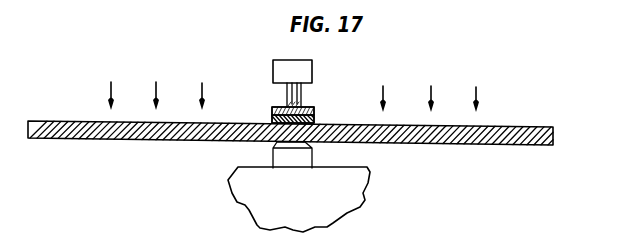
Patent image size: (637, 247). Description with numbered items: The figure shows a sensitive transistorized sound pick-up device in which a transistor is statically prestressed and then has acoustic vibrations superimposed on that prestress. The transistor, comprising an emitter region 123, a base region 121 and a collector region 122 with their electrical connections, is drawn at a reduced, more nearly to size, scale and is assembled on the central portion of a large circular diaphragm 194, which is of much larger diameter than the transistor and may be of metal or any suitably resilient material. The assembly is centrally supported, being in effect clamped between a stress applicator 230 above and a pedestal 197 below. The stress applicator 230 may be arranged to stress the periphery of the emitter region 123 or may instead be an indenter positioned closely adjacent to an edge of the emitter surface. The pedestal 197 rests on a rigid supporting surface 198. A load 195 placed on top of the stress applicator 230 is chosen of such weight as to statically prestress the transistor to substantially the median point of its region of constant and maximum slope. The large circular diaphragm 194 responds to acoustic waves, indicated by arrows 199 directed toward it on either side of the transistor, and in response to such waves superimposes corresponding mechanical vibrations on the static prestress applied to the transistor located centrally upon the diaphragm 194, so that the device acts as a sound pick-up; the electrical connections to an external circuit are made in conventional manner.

The base region 121 is at (314, 113).
The collector region 122 is at (272, 118).
The emitter region 123 is at (284, 106).
The circular diaphragm 194 is at (80, 131).
The load 195 is at (273, 62).
The pedestal 197 is at (312, 149).
The rigid supporting surface 198 is at (232, 190).
The acoustic waves 199 is at (200, 88).
The stress applicator 230 is at (301, 98).